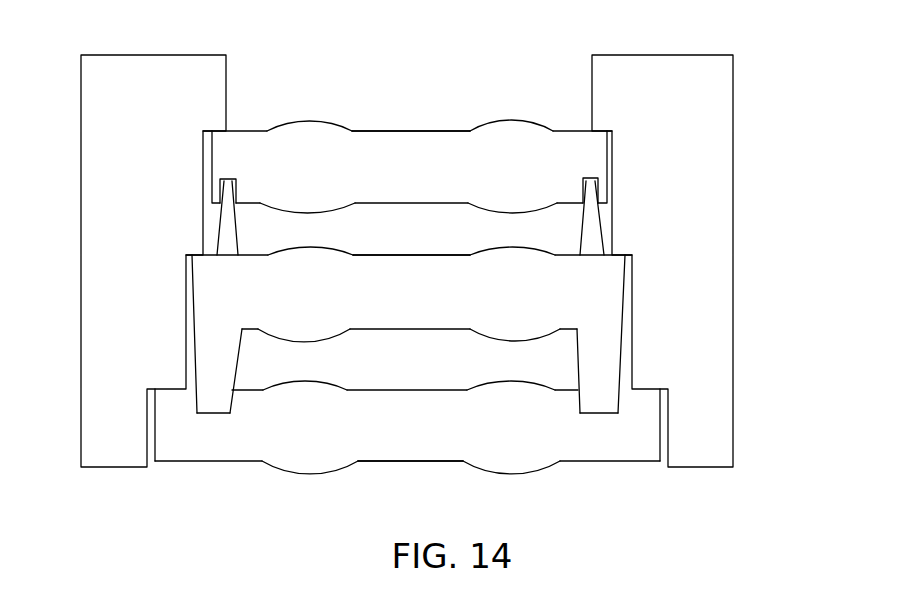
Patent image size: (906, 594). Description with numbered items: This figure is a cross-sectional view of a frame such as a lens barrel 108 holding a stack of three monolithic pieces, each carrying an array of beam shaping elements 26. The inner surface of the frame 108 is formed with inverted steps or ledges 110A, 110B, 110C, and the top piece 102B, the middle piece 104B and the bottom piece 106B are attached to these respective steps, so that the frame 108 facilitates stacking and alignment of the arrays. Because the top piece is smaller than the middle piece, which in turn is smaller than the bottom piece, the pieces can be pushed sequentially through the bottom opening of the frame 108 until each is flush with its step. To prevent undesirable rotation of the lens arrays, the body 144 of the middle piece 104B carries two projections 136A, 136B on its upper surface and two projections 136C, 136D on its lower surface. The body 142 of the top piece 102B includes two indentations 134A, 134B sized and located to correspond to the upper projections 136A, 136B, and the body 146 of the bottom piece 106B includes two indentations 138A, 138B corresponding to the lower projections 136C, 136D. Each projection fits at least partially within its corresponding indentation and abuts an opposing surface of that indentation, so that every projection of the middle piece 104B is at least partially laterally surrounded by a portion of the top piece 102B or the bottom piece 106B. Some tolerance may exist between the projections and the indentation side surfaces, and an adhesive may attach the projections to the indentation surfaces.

The lens barrel 108 is at (93, 70).
The beam shaping elements 26 is at (322, 122).
The top piece 102B is at (455, 171).
The middle piece 104B is at (478, 303).
The bottom piece 106B is at (472, 435).
The step 110A is at (213, 134).
The step 110B is at (194, 258).
The step 110C is at (163, 389).
The indentation 134A is at (233, 192).
The indentation 134B is at (583, 195).
The projection 136A is at (238, 236).
The projection 136B is at (585, 235).
The projection 136C is at (240, 343).
The projection 136D is at (577, 343).
The indentation 138A is at (205, 414).
The indentation 138B is at (591, 409).
The body 142 is at (369, 162).
The body 144 is at (357, 300).
The body 146 is at (377, 427).